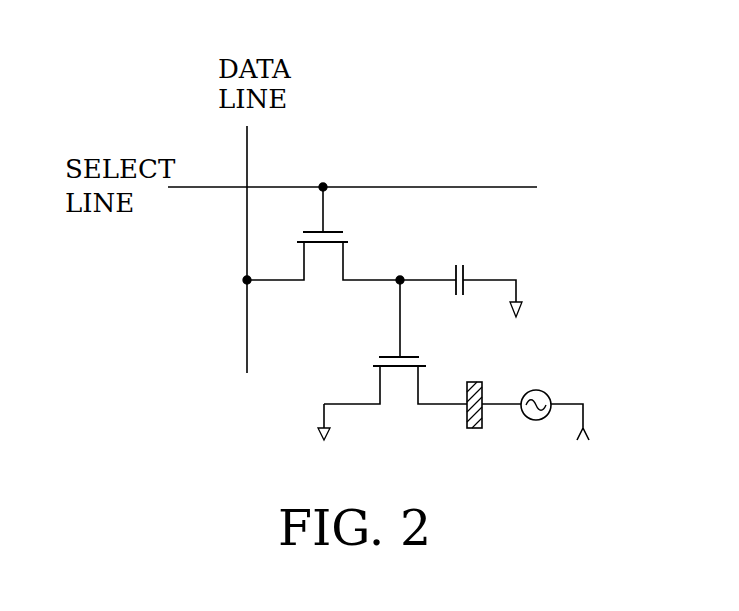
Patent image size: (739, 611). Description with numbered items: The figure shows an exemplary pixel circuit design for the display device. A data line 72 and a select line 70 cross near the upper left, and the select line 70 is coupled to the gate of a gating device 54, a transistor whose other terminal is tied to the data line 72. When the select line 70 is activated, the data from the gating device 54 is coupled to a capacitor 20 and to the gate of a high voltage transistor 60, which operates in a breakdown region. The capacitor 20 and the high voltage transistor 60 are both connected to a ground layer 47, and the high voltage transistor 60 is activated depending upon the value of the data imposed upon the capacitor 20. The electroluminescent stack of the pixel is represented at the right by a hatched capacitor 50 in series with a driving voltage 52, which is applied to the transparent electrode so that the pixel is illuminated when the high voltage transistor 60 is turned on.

The capacitor 20 is at (465, 271).
The ground layer 47 is at (318, 438).
The capacitor 50 is at (481, 388).
The driving voltage 52 is at (535, 390).
The gating device 54 is at (343, 262).
The high voltage transistor 60 is at (377, 366).
The select line 70 is at (292, 186).
The data line 72 is at (247, 312).